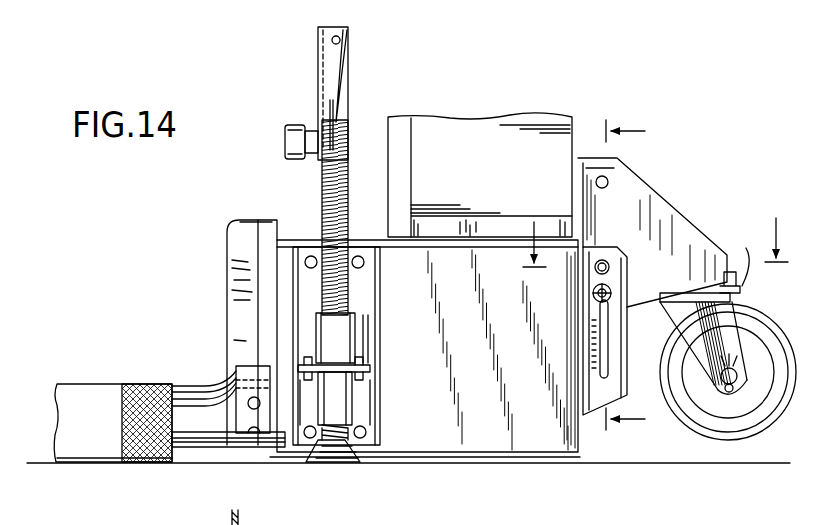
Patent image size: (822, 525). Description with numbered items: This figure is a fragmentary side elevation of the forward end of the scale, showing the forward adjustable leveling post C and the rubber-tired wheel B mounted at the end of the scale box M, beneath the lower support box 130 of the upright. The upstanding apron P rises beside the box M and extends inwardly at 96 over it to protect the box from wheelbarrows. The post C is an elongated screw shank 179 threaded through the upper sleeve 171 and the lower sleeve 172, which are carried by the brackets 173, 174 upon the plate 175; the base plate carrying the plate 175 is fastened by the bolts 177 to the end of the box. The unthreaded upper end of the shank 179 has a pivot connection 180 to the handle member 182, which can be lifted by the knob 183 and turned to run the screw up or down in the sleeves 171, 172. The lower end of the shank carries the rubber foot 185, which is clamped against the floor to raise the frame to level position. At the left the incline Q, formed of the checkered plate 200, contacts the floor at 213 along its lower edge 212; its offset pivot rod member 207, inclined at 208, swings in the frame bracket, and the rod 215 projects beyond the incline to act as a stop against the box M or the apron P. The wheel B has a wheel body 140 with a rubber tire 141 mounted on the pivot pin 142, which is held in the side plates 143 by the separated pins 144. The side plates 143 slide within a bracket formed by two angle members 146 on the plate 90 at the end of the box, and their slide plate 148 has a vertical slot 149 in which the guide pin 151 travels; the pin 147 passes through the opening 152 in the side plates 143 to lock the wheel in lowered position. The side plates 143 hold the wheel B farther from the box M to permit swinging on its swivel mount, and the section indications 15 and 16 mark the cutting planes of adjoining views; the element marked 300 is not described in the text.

The box M is at (480, 428).
The lower support box 130 is at (548, 130).
The upstanding apron P is at (222, 237).
The apron extension 96 is at (262, 220).
The shank 179 is at (350, 98).
The pivot connection 180 is at (341, 38).
The handle member 182 is at (333, 95).
The knob 183 is at (286, 138).
The leveling post C is at (320, 188).
The bolts 177 is at (356, 257).
The upper sleeve 171 is at (345, 330).
The bracket 173 is at (368, 356).
The plate 175 is at (372, 368).
The bracket 174 is at (362, 380).
The lower sleeve 172 is at (338, 404).
The rubber foot 185 is at (336, 458).
The plate 200 is at (60, 388).
The incline Q is at (95, 384).
The floor contact 213 is at (40, 465).
The bottom plate 212 is at (115, 460).
The offset pivot rod member 207 is at (186, 398).
The inclined portion 208 is at (232, 382).
The rod 215 is at (195, 448).
The side plates 143 is at (655, 203).
The opening 152 is at (606, 178).
The slide plate 148 is at (627, 328).
The pin 147 is at (608, 264).
The guide pin 151 is at (597, 297).
The vertical slot 149 is at (609, 352).
The wheel body 140 is at (711, 403).
The rubber tire 141 is at (676, 410).
The pivot pin 142 is at (737, 372).
The separated pins 144 is at (735, 388).
The clip 300 is at (740, 258).
The rubber-tired wheel B is at (725, 444).
The plate 90 is at (580, 440).
The section line 15 is at (655, 253).
The section line 16 is at (613, 274).
The angle members 146 is at (240, 522).